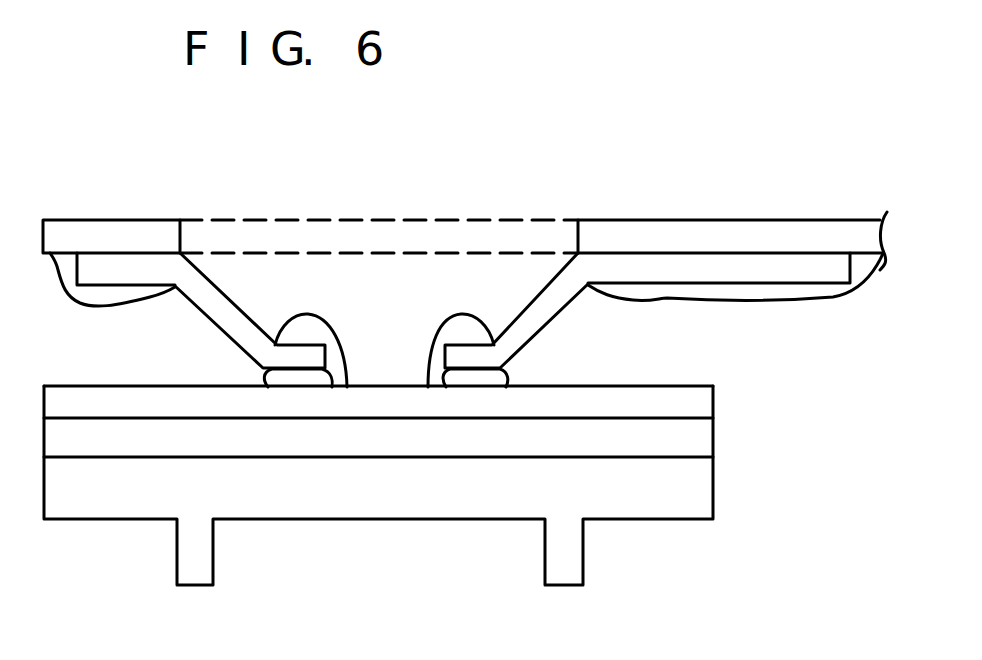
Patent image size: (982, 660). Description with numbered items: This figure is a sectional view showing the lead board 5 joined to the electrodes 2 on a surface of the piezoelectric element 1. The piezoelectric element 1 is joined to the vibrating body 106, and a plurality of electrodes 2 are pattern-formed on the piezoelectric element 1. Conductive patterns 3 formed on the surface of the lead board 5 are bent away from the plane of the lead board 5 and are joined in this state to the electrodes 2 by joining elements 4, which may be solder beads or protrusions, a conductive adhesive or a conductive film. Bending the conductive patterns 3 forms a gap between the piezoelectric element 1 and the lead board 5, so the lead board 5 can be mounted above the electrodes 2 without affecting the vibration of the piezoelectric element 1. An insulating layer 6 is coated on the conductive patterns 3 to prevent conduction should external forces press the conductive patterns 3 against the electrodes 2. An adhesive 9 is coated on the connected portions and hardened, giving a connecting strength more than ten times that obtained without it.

The piezoelectric element 1 is at (697, 442).
The electrodes 2 is at (697, 405).
The conductive patterns 3 is at (747, 265).
The joining elements 4 is at (490, 382).
The lead board 5 is at (737, 238).
The insulating layer 6 is at (662, 292).
The adhesive 9 is at (312, 335).
The vibrating body 106 is at (697, 495).